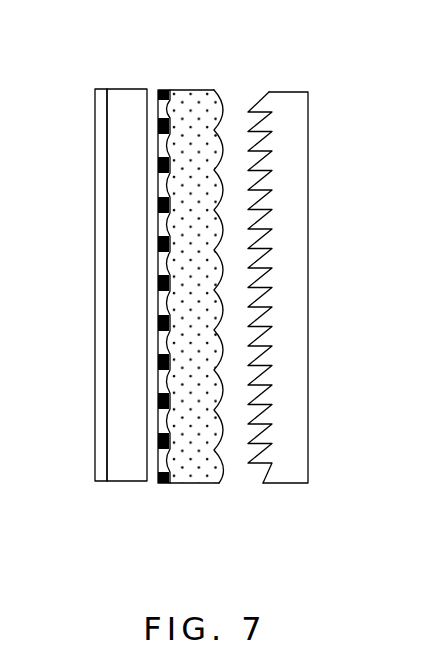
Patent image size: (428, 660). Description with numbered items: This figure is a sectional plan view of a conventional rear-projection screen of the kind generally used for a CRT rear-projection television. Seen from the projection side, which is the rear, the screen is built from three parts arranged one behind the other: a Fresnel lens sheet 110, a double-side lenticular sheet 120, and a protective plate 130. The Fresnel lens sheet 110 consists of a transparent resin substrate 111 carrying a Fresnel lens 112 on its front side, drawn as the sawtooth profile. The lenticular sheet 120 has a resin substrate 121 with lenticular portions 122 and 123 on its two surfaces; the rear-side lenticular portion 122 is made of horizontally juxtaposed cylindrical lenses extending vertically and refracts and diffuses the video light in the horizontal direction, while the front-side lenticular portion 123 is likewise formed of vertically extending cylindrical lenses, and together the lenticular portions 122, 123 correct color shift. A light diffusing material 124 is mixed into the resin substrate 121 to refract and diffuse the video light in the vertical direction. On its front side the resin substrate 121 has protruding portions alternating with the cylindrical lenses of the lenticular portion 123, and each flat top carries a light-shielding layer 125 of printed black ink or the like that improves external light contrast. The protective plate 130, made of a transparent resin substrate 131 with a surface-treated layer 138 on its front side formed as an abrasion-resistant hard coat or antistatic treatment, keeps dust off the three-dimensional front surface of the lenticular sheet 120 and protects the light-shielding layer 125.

The Fresnel lens sheet 110 is at (308, 264).
The transparent resin substrate 111 is at (288, 453).
The Fresnel lens 112 is at (261, 468).
The double-side lenticular sheet 120 is at (170, 293).
The resin substrate 121 is at (187, 483).
The lenticular portion 122 is at (218, 472).
The lenticular portion 123 is at (168, 460).
The light diffusing material 124 is at (198, 462).
The light-shielding layer 125 is at (157, 483).
The protective plate 130 is at (97, 243).
The transparent resin substrate 131 is at (117, 453).
The surface-treated layer 138 is at (98, 407).